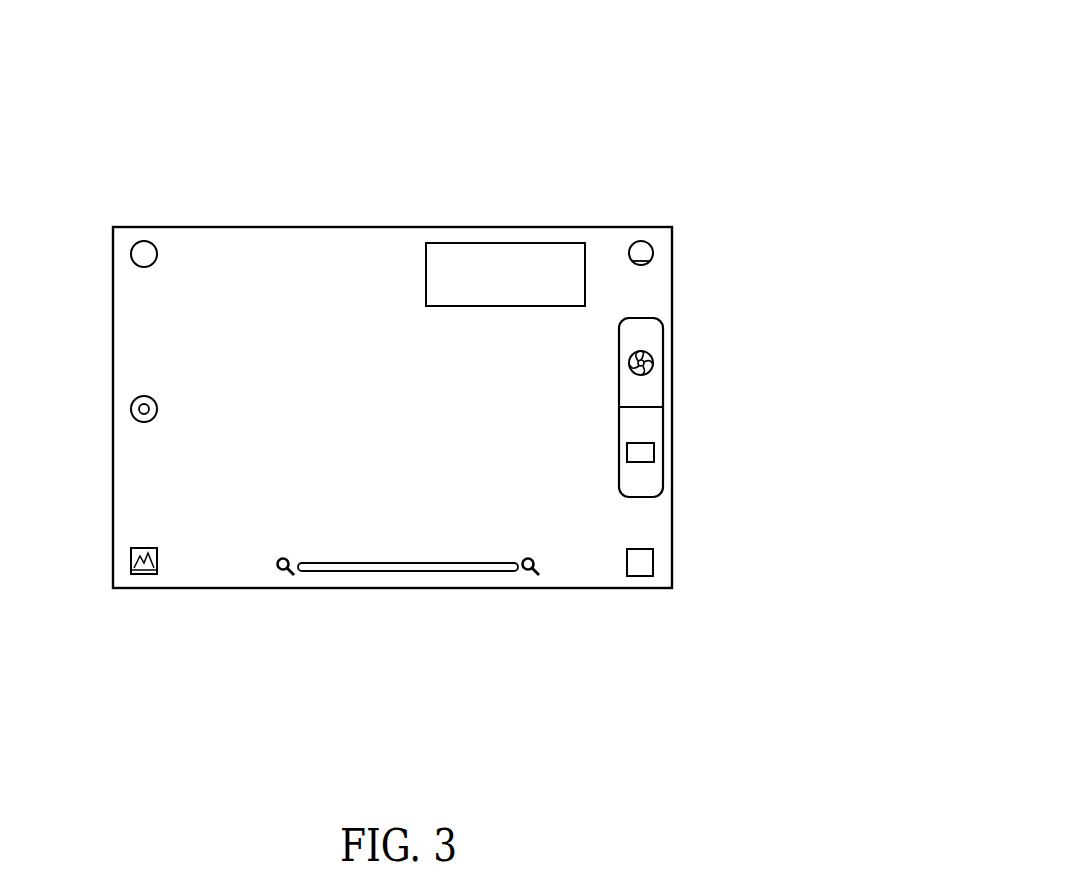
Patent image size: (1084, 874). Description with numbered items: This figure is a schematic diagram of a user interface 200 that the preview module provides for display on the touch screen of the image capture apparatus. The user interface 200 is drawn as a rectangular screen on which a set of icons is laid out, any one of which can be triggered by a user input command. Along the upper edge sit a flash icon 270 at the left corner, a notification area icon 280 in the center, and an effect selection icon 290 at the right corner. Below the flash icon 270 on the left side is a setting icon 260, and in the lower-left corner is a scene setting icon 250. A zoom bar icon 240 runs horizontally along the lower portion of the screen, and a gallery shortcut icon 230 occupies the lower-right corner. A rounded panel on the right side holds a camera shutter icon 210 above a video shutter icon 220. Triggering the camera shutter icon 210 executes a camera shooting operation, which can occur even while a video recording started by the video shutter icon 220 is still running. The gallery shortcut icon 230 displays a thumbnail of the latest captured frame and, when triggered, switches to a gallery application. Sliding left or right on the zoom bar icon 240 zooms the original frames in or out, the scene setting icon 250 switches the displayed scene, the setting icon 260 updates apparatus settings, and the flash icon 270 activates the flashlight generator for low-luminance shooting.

The user interface 200 is at (646, 104).
The camera shutter icon 210 is at (664, 368).
The video shutter icon 220 is at (655, 451).
The gallery shortcut icon 230 is at (654, 565).
The zoom bar icon 240 is at (406, 560).
The scene setting icon 250 is at (131, 561).
The setting icon 260 is at (131, 409).
The flash icon 270 is at (131, 256).
The notification area icon 280 is at (505, 243).
The effect selection icon 290 is at (653, 255).